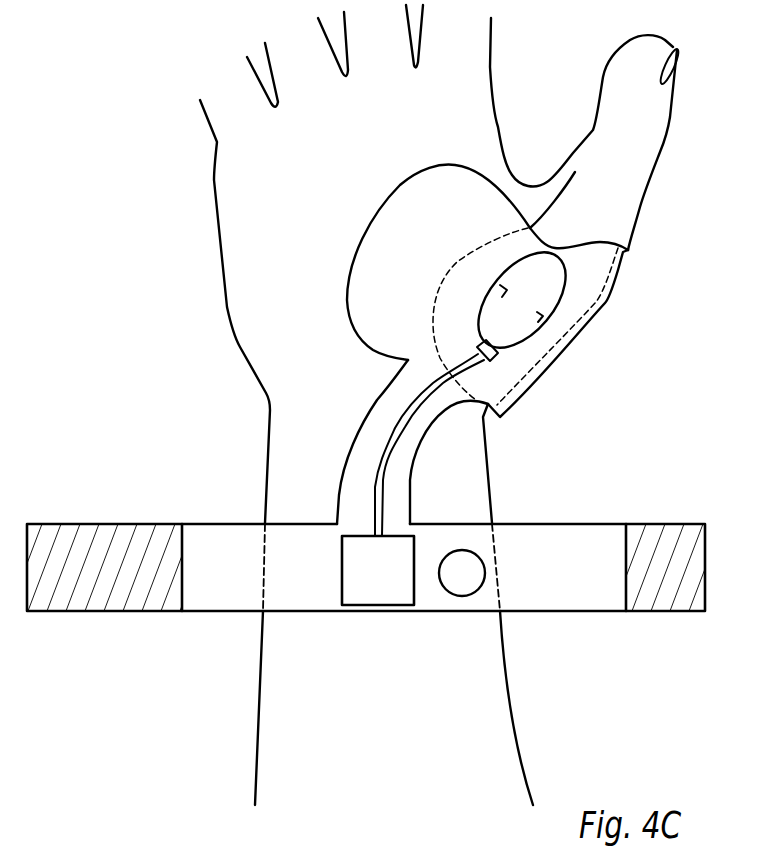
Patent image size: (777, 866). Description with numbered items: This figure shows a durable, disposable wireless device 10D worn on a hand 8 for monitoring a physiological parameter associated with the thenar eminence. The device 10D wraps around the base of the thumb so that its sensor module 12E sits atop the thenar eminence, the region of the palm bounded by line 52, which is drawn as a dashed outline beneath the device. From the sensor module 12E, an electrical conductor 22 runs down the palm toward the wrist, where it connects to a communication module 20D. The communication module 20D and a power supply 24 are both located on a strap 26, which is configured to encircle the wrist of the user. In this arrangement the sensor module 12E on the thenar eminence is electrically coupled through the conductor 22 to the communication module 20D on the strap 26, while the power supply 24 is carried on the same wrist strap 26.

The hand 8 is at (663, 125).
The device 10D is at (630, 255).
The line bounding the thenar eminence 52 is at (499, 236).
The sensor module 12E is at (535, 333).
The conductor 22 is at (393, 440).
The strap 26 is at (563, 522).
The communication module 20D is at (378, 588).
The power supply 24 is at (463, 596).